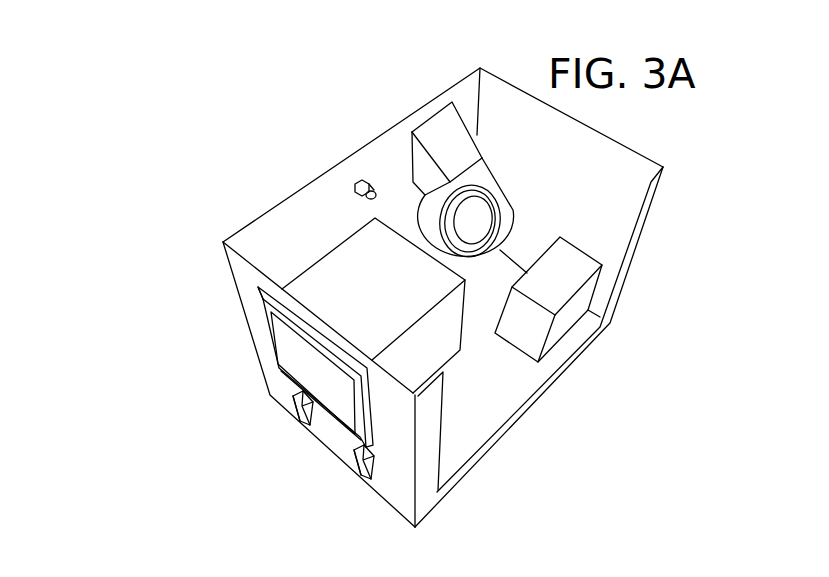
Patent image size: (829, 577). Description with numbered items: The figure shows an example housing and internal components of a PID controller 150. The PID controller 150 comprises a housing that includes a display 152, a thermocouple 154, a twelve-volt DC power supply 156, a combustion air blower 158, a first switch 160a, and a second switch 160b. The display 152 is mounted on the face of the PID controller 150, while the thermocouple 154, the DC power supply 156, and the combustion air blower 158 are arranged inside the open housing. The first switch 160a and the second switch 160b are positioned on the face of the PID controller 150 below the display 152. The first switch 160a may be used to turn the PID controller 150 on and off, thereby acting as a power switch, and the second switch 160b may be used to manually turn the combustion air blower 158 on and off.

The PID controller 150 is at (228, 192).
The display 152 is at (288, 337).
The thermocouple 154 is at (363, 180).
The 12V DC power supply 156 is at (566, 314).
The combustion air blower 158 is at (436, 142).
The first switch 160a is at (298, 417).
The second switch 160b is at (368, 480).